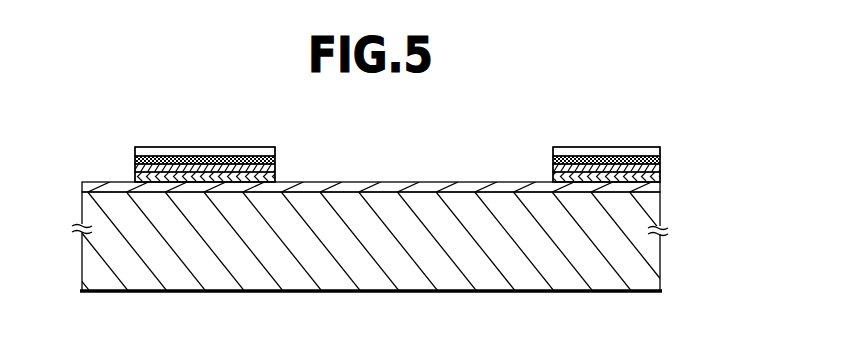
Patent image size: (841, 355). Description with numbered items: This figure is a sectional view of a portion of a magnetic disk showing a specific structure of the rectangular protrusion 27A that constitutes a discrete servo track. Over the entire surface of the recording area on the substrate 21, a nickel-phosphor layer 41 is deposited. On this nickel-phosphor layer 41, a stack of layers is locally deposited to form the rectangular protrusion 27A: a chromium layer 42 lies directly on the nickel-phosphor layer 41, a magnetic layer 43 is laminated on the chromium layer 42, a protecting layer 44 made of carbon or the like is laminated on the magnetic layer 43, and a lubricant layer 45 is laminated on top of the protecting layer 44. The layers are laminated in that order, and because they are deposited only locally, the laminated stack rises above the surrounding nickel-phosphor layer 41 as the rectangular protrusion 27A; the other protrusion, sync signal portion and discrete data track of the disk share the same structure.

The substrate 21 is at (147, 278).
The nickel-phosphor layer 41 is at (368, 188).
The chromium layer 42 is at (135, 177).
The magnetic layer 43 is at (135, 166).
The protecting layer 44 is at (135, 160).
The lubricant layer 45 is at (181, 147).
The rectangular protrusion 27A is at (278, 144).